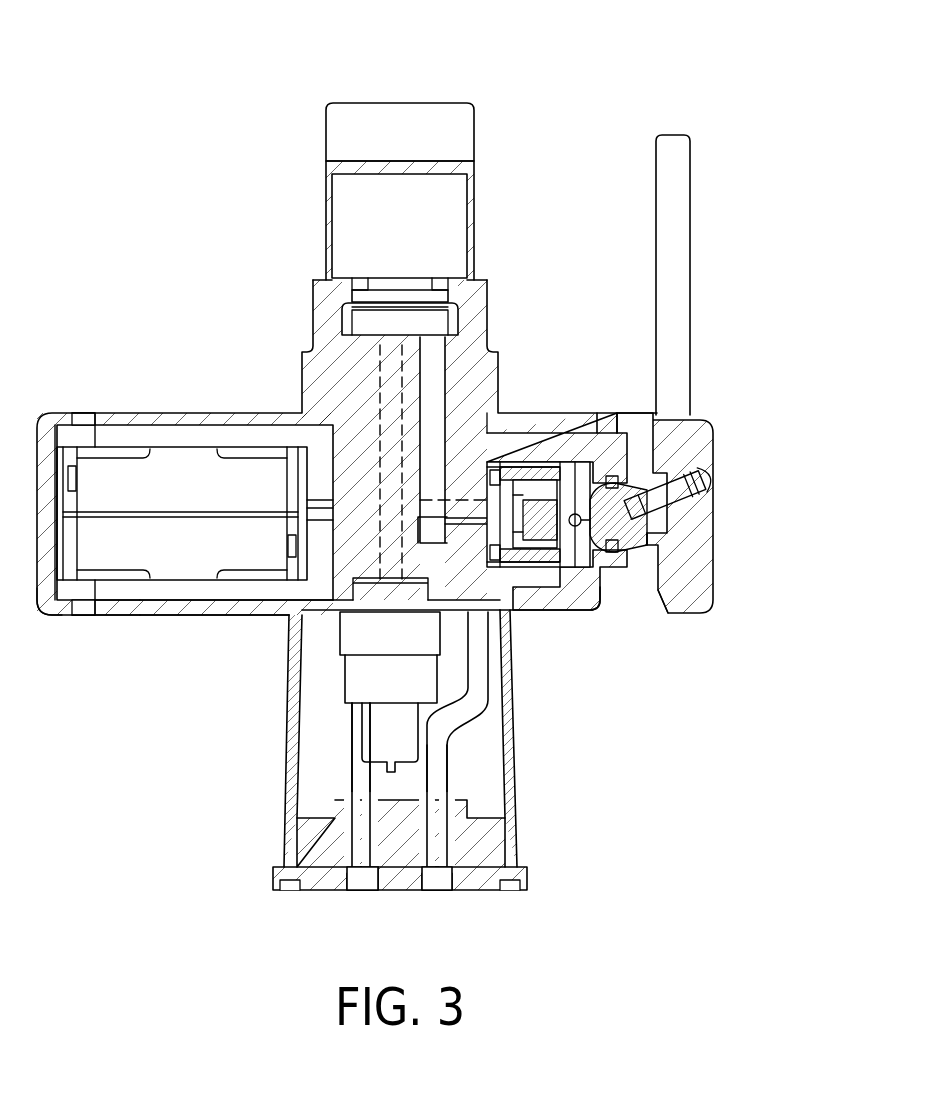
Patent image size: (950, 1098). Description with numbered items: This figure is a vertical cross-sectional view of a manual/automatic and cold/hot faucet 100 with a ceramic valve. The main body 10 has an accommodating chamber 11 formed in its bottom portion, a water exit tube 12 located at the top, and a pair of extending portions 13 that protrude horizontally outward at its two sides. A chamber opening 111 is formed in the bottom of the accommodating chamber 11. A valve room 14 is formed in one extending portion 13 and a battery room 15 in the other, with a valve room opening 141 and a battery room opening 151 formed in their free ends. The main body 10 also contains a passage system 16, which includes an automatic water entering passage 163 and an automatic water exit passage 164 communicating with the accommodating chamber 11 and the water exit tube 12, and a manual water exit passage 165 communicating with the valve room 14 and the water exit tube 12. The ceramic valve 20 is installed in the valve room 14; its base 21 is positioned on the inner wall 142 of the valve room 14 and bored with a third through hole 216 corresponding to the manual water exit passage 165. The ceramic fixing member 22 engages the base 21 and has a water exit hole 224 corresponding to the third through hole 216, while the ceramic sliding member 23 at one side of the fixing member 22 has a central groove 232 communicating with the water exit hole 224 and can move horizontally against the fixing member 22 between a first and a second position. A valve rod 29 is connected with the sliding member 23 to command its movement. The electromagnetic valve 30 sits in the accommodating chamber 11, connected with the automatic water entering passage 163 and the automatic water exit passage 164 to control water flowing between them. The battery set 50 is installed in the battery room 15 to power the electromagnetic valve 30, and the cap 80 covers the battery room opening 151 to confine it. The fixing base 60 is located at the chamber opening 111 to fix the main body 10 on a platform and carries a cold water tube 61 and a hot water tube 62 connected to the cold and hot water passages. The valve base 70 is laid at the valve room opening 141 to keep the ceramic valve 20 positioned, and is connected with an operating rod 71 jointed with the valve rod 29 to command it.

The manual/automatic and cold/hot faucet 100 is at (240, 200).
The main body 10 is at (122, 405).
The accommodating chamber 11 is at (300, 720).
The water exit tube 12 is at (357, 115).
The extending portions 13 is at (173, 614).
The valve room 14 is at (555, 440).
The battery room 15 is at (115, 614).
The passage system 16 is at (452, 350).
The ceramic valve 20 is at (639, 542).
The base 21 is at (512, 585).
The fixing member 22 is at (515, 447).
The sliding member 23 is at (625, 478).
The valve rod 29 is at (660, 574).
The electromagnetic valve 30 is at (325, 636).
The battery set 50 is at (183, 440).
The fixing base 60 is at (542, 878).
The cold water tube 61 is at (360, 778).
The hot water tube 62 is at (437, 745).
The valve base 70 is at (700, 607).
The operating rod 71 is at (680, 393).
The cap 80 is at (63, 405).
The chamber opening 111 is at (283, 864).
The valve room opening 141 is at (602, 415).
The inner wall 142 is at (502, 440).
The battery room opening 151 is at (62, 620).
The automatic water entering passage 163 is at (460, 447).
The automatic water exit passage 164 is at (380, 370).
The manual water exit passage 165 is at (430, 350).
The third through hole 216 is at (498, 575).
The water exit hole 224 is at (560, 587).
The groove 232 is at (632, 490).